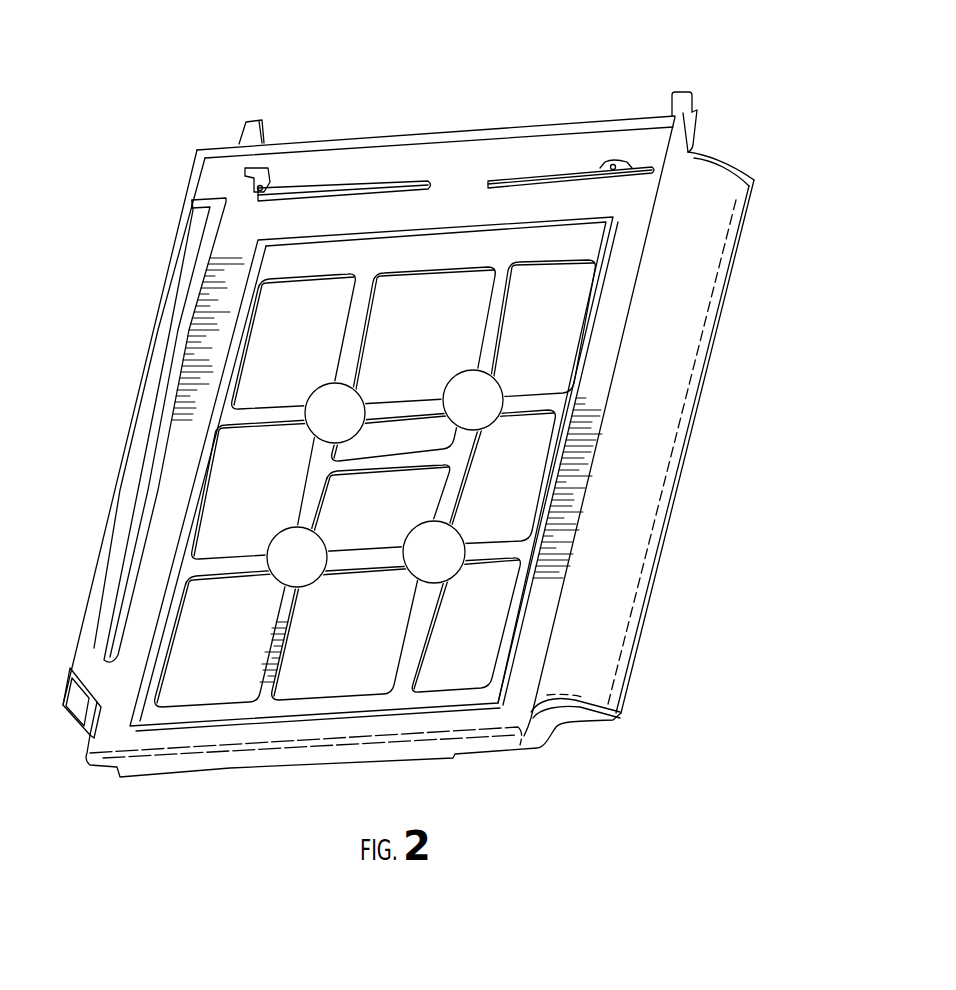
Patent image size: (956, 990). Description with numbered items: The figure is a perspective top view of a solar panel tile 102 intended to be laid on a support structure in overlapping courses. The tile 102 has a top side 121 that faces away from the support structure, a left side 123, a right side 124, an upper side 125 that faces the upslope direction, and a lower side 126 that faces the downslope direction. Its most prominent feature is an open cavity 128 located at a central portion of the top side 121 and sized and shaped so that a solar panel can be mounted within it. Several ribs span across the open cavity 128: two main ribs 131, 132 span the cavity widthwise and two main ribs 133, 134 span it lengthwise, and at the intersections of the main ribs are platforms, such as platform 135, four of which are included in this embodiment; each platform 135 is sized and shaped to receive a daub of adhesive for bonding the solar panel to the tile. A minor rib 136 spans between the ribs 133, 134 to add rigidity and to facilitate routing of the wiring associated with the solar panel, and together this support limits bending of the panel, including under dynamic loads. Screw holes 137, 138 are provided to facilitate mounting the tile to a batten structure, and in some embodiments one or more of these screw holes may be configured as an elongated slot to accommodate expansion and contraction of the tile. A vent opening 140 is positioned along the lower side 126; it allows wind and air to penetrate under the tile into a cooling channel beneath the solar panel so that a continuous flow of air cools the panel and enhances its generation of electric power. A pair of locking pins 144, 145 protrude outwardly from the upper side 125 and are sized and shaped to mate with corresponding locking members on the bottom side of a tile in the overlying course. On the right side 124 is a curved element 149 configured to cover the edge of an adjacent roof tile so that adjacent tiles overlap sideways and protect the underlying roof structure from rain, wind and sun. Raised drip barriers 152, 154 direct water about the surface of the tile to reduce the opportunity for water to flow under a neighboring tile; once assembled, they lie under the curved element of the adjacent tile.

The solar panel tile 102 is at (553, 88).
The top side 121 is at (190, 420).
The left side 123 is at (110, 492).
The right side 124 is at (682, 480).
The upper side 125 is at (503, 123).
The lower side 126 is at (385, 753).
The cavity 128 is at (523, 463).
The main rib 131 is at (275, 412).
The main rib 132 is at (487, 553).
The main rib 133 is at (355, 343).
The main rib 134 is at (413, 635).
The platform 135 is at (487, 400).
The minor rib 136 is at (363, 466).
The screw hole 137 is at (268, 186).
The screw hole 138 is at (612, 163).
The vent opening 140 is at (293, 765).
The locking pin 144 is at (248, 133).
The locking pin 145 is at (682, 93).
The curved element 149 is at (708, 170).
The raised drip barrier 152 is at (365, 186).
The raised drip barrier 154 is at (203, 277).